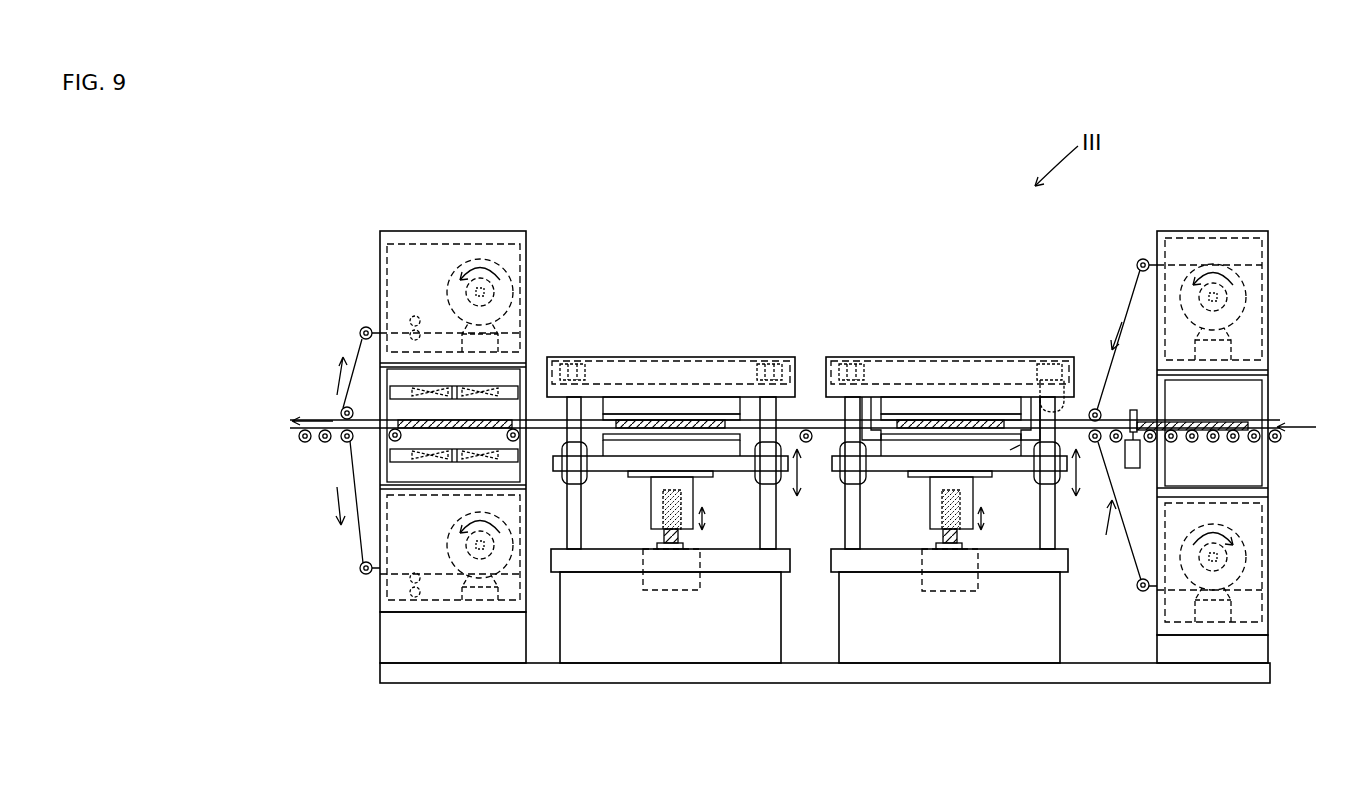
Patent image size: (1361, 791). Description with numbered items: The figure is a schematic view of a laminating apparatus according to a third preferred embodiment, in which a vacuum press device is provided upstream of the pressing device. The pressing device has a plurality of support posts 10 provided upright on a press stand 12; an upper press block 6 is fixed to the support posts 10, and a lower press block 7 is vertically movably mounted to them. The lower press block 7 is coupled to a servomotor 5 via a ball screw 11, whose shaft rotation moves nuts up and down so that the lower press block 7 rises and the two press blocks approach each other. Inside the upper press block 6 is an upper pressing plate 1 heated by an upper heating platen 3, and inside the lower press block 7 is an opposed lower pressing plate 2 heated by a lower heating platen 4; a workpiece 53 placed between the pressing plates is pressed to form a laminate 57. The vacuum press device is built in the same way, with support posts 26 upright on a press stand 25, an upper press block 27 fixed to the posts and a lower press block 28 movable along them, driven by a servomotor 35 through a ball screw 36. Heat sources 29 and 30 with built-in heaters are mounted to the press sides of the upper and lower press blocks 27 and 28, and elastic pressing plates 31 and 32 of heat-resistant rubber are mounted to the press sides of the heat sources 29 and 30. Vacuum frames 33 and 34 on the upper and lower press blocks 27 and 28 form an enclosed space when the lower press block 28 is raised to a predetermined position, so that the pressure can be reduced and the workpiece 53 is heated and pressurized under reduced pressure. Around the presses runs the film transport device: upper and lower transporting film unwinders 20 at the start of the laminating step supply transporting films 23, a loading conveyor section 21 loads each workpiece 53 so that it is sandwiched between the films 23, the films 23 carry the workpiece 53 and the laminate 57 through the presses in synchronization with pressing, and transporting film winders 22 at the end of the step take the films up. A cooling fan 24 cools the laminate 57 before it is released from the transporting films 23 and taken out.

The second pressing plate 1 is at (720, 417).
The first pressing plate 2 is at (728, 437).
The second heating platen 3 is at (652, 405).
The first heating platen 4 is at (708, 450).
The servomotor 5 is at (676, 585).
The second press block 6 is at (612, 366).
The first press block 7 is at (593, 466).
The support posts 10 is at (572, 407).
The ball screw 11 is at (649, 541).
The press stand 12 is at (607, 563).
The transporting film unwinders 20 is at (1220, 292).
The loading conveyor section 21 is at (1213, 442).
The transporting film winders 22 is at (478, 292).
The transporting films 23 is at (350, 355).
The cooling fan 24 is at (430, 392).
The press stand 25 is at (888, 563).
The support posts 26 is at (850, 405).
The upper press block 27 is at (893, 366).
The lower press block 28 is at (866, 466).
The heat source 29 is at (946, 405).
The heat source 30 is at (980, 455).
The elastic pressing plate 31 is at (978, 418).
The elastic pressing plate 32 is at (998, 437).
The vacuum frame 33 is at (1057, 362).
The vacuum frame 34 is at (1018, 455).
The servomotor 35 is at (955, 585).
The ball screw 36 is at (928, 541).
The workpiece 53 is at (690, 418).
The laminate 57 is at (452, 428).